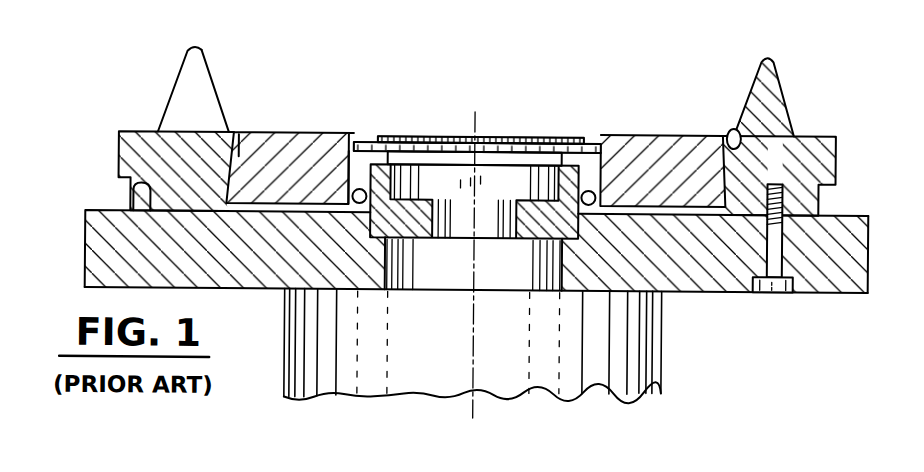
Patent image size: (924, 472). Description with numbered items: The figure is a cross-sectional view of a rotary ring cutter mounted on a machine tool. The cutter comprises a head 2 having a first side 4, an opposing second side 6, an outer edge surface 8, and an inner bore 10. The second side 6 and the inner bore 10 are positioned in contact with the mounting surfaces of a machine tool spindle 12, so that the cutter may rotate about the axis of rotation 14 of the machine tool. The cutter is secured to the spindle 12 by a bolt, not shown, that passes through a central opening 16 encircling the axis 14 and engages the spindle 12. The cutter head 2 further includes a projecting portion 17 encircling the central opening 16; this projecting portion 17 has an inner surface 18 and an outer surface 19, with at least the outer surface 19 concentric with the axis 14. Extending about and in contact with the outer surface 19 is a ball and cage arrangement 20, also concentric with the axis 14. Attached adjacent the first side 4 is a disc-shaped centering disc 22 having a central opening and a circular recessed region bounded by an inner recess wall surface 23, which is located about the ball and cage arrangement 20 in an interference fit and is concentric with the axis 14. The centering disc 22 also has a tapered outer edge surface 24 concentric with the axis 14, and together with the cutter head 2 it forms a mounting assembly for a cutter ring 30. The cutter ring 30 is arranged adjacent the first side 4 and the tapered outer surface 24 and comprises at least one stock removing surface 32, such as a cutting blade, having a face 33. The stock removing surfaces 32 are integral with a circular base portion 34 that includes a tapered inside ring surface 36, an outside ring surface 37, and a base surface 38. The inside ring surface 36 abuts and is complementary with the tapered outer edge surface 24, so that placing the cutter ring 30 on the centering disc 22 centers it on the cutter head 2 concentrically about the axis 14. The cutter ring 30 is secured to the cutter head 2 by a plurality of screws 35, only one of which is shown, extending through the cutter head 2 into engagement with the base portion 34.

The head 2 is at (868, 247).
The first side 4 is at (853, 210).
The second side 6 is at (703, 291).
The outer edge surface 8 is at (86, 243).
The inner bore 10 is at (447, 214).
The machine tool spindle 12 is at (400, 364).
The axis of rotation 14 is at (474, 112).
The central opening 16 is at (493, 213).
The projecting portion 17 is at (560, 194).
The inner surface 18 is at (548, 140).
The outer surface 19 is at (598, 175).
The ball and cage arrangement 20 is at (369, 149).
The centering disc 22 is at (320, 135).
The inner recess wall surface 23 is at (357, 141).
The tapered outer edge surface 24 is at (250, 152).
The cutter ring 30 is at (173, 130).
The stock removing surface 32 is at (200, 52).
The face 33 is at (205, 94).
The circular base portion 34 is at (126, 151).
The screw 35 is at (785, 290).
The tapered inside ring surface 36 is at (731, 126).
The outside ring surface 37 is at (840, 150).
The base surface 38 is at (133, 195).